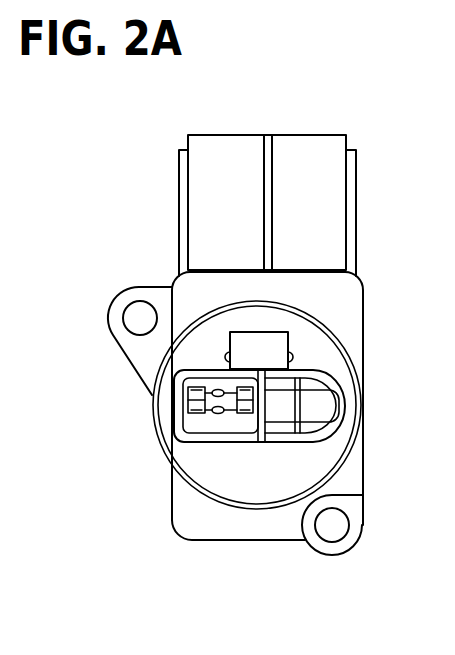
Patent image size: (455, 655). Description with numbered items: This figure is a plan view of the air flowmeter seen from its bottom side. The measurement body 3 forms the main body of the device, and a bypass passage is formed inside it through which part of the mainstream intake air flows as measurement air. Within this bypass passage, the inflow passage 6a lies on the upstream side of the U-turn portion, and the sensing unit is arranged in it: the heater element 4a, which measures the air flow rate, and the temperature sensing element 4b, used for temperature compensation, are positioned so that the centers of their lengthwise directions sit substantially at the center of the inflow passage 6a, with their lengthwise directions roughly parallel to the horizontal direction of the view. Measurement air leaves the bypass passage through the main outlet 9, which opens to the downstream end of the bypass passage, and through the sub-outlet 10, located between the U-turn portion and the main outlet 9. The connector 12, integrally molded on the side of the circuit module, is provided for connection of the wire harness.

The connector 12 is at (327, 200).
The measurement body 3 is at (324, 366).
The inflow passage 6a is at (240, 427).
The temperature sensing element 4b is at (210, 386).
The heater element 4a is at (222, 412).
The sub-outlet 10 is at (282, 433).
The main outlet 9 is at (328, 407).